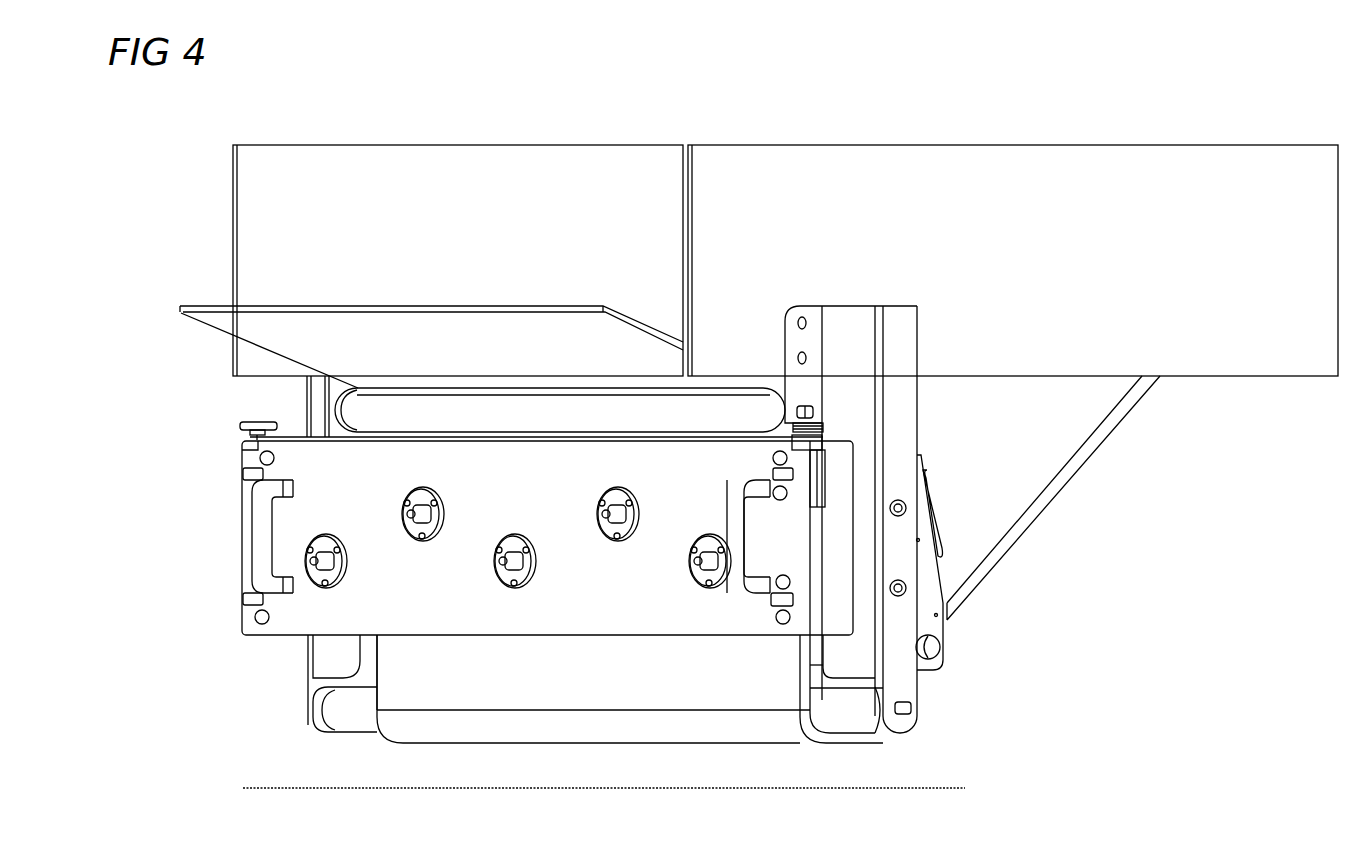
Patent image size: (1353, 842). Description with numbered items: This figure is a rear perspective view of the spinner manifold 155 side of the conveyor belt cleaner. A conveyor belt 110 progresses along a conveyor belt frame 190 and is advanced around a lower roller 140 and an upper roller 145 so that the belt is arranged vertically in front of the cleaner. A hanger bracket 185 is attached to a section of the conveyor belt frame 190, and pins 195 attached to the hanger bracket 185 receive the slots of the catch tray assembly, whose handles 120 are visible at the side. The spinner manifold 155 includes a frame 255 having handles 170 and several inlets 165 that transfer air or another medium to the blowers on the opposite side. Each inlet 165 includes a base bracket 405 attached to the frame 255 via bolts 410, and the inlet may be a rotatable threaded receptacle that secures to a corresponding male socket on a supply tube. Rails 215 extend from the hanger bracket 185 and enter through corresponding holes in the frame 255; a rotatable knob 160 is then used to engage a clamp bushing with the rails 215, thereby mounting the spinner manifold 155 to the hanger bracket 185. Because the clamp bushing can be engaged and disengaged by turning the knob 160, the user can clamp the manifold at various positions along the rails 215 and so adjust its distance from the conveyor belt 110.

The conveyor belt 110 is at (180, 309).
The handles 120 is at (922, 476).
The lower roller 140 is at (321, 717).
The upper roller 145 is at (332, 405).
The spinner manifold 155 is at (196, 402).
The knob 160 is at (239, 428).
The inlets 165 is at (410, 515).
The handles 170 is at (252, 541).
The hanger bracket 185 is at (785, 332).
The conveyor belt frame 190 is at (785, 260).
The pins 195 is at (906, 508).
The rails 215 is at (241, 473).
The frame 255 is at (390, 599).
The base bracket 405 is at (410, 496).
The bolts 410 is at (432, 491).